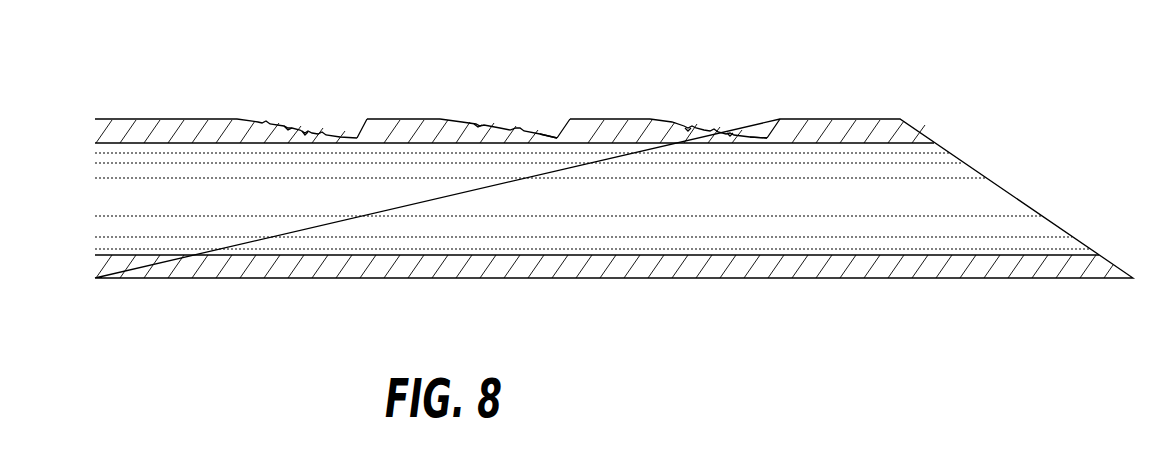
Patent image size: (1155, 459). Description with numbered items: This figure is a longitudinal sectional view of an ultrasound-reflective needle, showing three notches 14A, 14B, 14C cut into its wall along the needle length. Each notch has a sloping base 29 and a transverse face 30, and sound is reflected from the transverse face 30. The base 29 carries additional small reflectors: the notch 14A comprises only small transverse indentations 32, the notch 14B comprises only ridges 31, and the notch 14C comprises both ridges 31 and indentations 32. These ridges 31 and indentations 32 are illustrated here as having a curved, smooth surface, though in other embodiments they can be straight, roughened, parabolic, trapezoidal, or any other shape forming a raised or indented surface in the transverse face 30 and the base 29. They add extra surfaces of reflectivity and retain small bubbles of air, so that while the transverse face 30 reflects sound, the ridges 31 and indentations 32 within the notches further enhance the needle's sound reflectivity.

The notch 14A is at (673, 122).
The notch 14B is at (457, 120).
The notch 14C is at (250, 118).
The base 29 is at (557, 138).
The transverse face 30 is at (360, 136).
The ridge 31 is at (288, 128).
The indentation 32 is at (306, 134).